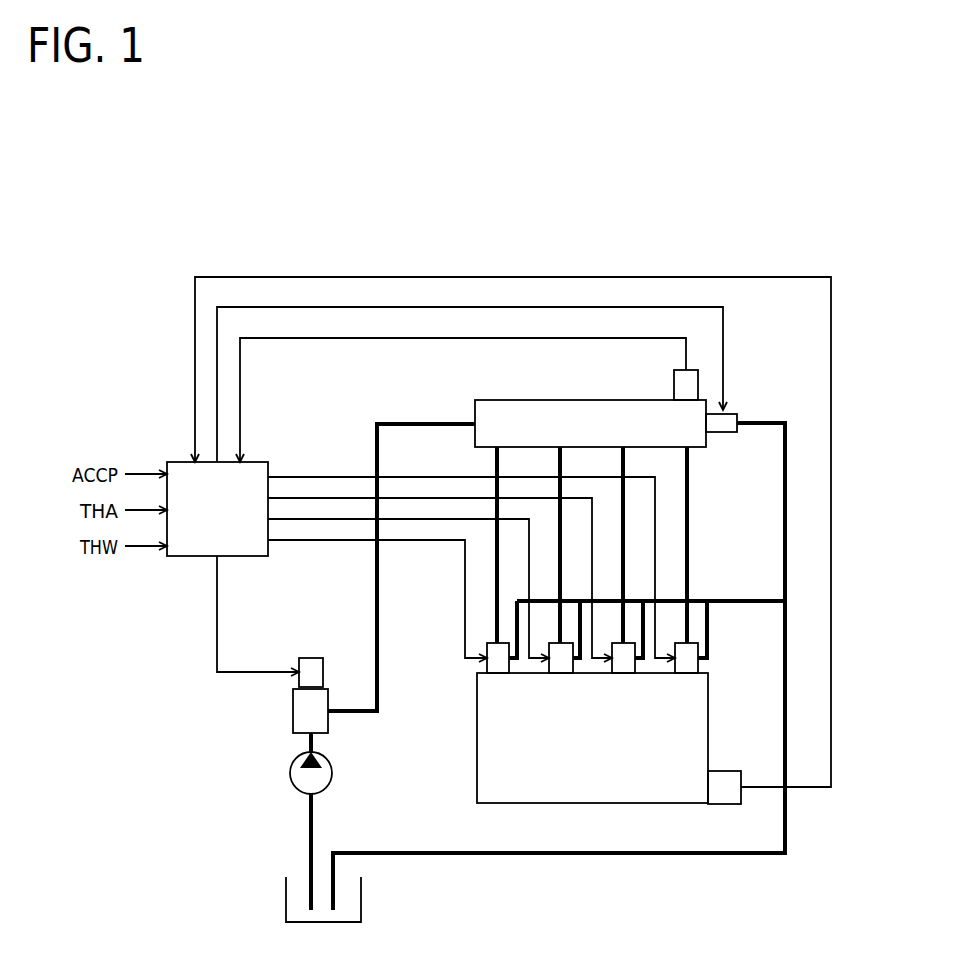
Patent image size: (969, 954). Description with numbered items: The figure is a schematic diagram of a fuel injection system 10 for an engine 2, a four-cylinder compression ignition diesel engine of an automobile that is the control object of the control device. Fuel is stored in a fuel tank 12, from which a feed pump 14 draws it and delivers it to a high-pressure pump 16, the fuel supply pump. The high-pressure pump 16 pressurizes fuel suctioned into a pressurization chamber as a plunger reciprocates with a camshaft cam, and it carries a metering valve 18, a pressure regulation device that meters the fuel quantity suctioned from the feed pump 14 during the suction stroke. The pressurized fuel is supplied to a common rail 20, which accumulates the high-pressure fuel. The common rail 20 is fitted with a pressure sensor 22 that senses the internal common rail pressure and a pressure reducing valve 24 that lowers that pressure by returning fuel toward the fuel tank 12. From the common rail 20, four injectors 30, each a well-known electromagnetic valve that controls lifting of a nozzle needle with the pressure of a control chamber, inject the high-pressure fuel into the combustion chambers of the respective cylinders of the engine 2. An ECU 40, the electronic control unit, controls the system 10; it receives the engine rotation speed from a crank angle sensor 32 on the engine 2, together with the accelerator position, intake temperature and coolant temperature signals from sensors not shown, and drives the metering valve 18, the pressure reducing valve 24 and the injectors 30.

The fuel injection system 10 is at (518, 268).
The engine 2 is at (477, 740).
The fuel tank 12 is at (363, 898).
The feed pump 14 is at (290, 776).
The high-pressure pump 16 is at (293, 713).
The metering valve 18 is at (306, 657).
The common rail 20 is at (477, 400).
The pressure sensor 22 is at (674, 386).
The pressure reducing valve 24 is at (730, 410).
The injector 30 is at (486, 664).
The crank angle sensor 32 is at (724, 804).
The ECU 40 is at (172, 461).